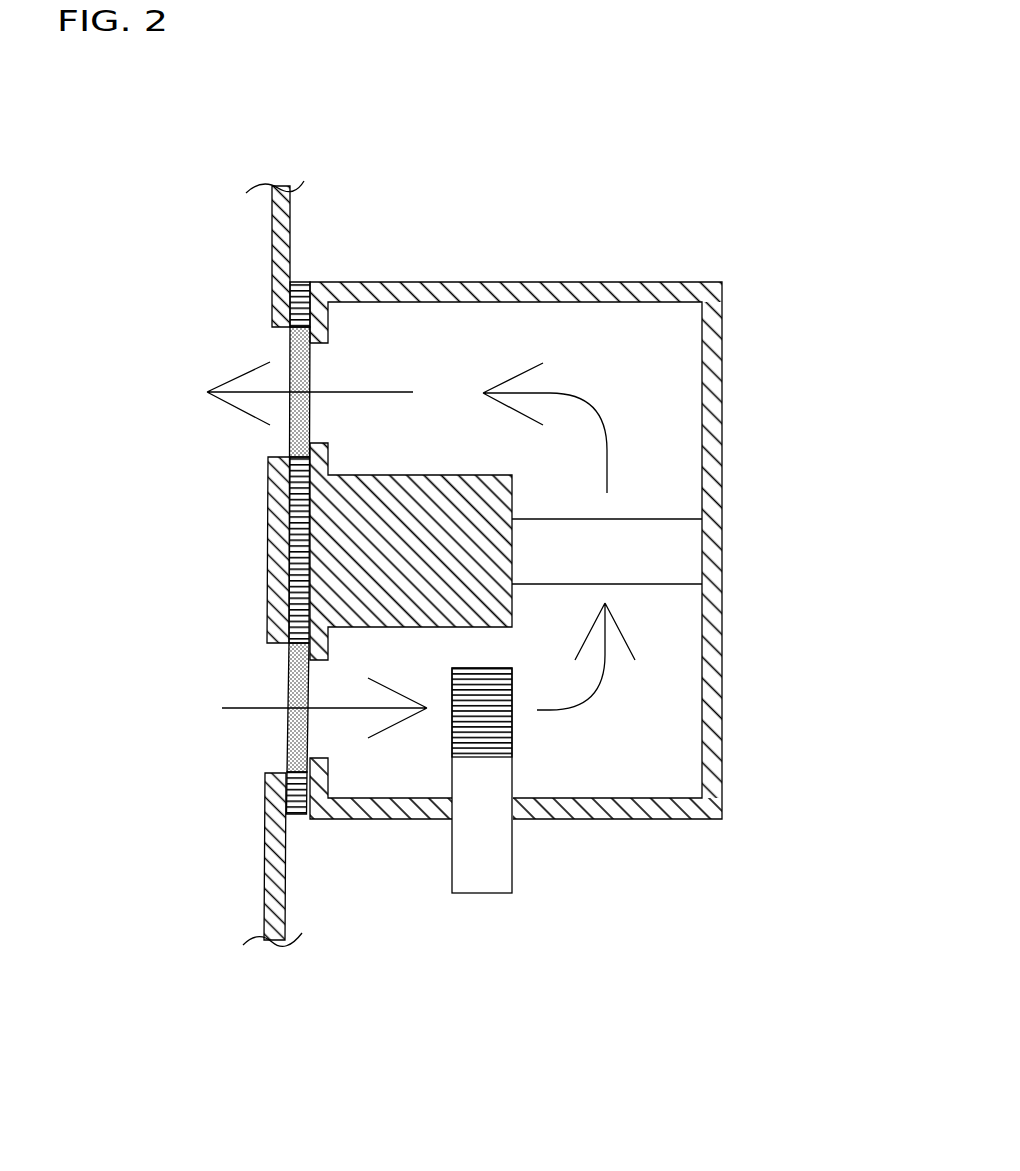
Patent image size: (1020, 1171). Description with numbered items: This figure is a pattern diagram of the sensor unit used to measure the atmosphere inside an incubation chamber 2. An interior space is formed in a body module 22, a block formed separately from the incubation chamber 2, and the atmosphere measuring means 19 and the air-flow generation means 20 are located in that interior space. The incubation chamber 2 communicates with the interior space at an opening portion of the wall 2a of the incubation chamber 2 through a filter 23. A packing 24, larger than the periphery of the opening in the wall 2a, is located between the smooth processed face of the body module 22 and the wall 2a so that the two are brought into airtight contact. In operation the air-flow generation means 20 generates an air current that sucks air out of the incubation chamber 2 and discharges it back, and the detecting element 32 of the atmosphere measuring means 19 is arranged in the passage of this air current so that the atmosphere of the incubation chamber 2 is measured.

The incubation chamber 2 is at (86, 408).
The wall 2a is at (272, 287).
The atmosphere measuring means 19 is at (468, 878).
The air-flow generation means 20 is at (660, 550).
The body module 22 is at (480, 287).
The filter 23 is at (288, 352).
The packing 24 is at (300, 279).
The detecting element 32 is at (497, 703).